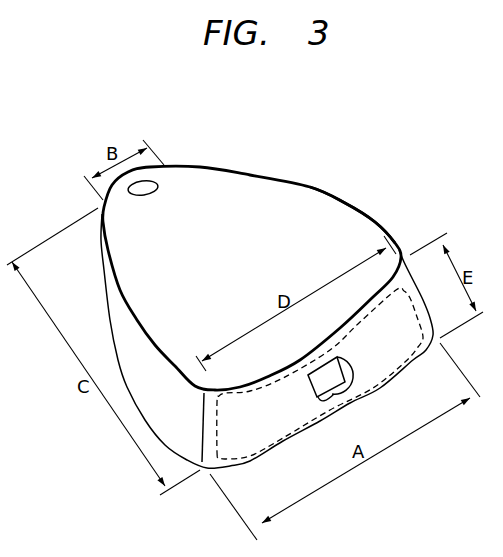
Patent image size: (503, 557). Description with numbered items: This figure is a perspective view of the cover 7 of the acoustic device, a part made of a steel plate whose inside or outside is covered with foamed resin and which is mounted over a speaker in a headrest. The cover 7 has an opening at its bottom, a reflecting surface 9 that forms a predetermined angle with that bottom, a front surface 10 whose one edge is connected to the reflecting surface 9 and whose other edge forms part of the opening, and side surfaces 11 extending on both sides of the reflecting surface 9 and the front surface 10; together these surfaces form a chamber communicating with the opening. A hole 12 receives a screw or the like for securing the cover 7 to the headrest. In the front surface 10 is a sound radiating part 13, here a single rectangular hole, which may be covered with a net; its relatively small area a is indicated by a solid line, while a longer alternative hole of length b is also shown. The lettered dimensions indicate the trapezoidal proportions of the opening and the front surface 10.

The cover 7 is at (314, 183).
The reflecting surface 9 is at (362, 222).
The front surface 10 is at (410, 357).
The side surfaces 11 is at (110, 299).
The hole 12 is at (160, 190).
The sound radiating part 13 is at (300, 392).
The area of sound radiating part a is at (323, 399).
The length of hole b is at (346, 374).